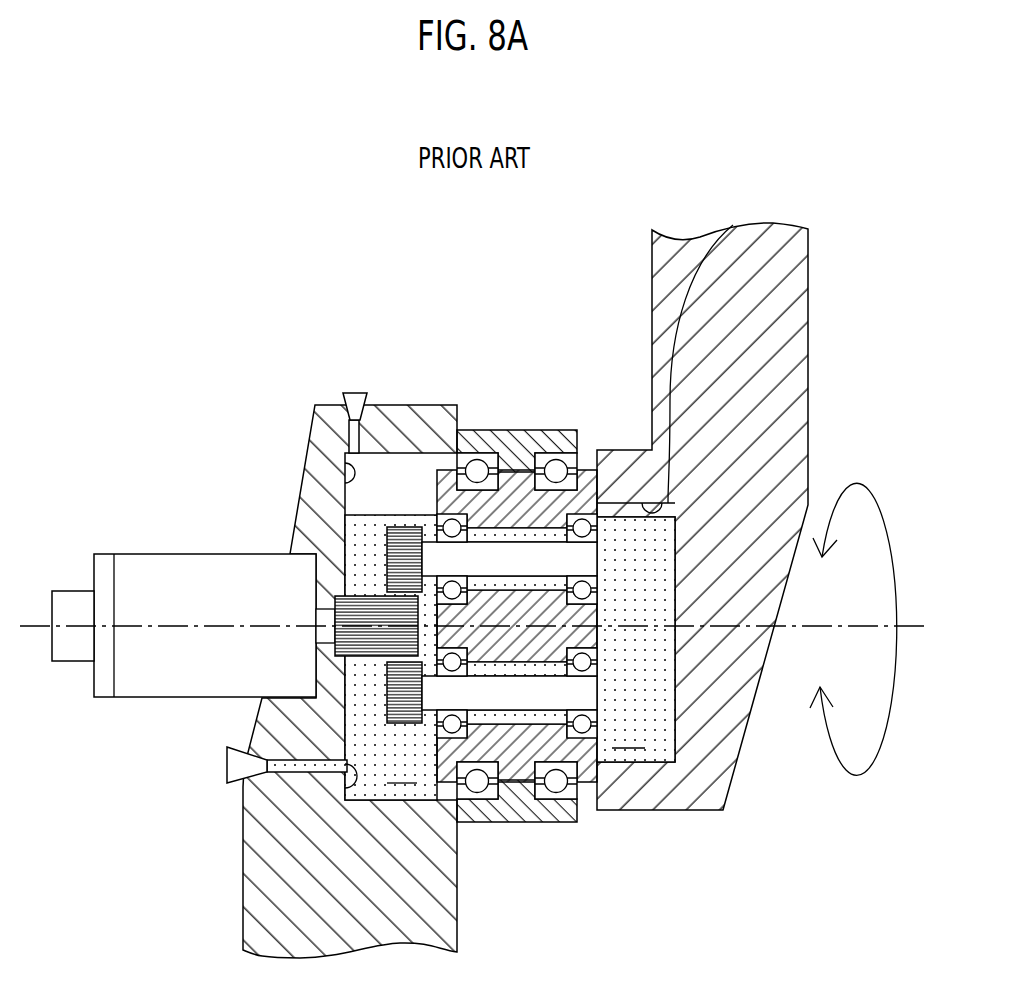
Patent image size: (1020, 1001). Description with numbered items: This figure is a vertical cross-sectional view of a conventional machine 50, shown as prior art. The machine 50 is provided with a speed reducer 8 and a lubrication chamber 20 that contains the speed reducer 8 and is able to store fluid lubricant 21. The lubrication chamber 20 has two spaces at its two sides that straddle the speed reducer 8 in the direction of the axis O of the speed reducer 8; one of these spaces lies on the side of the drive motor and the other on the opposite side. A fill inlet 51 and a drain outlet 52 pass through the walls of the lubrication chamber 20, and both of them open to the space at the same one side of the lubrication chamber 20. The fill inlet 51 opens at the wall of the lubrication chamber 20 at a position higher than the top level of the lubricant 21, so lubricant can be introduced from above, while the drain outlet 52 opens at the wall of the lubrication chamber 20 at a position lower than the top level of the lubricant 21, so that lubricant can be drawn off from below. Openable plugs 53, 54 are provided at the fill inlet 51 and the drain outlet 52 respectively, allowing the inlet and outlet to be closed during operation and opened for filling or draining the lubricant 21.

The machine 50 is at (475, 565).
The lubrication chamber 20 is at (352, 466).
The lubricant 21 is at (365, 513).
The speed reducer 8 is at (612, 677).
The fill inlet 51 is at (374, 460).
The drain outlet 52 is at (345, 790).
The openable plug 53 is at (355, 393).
The openable plug 54 is at (227, 768).
The axis O is at (817, 626).